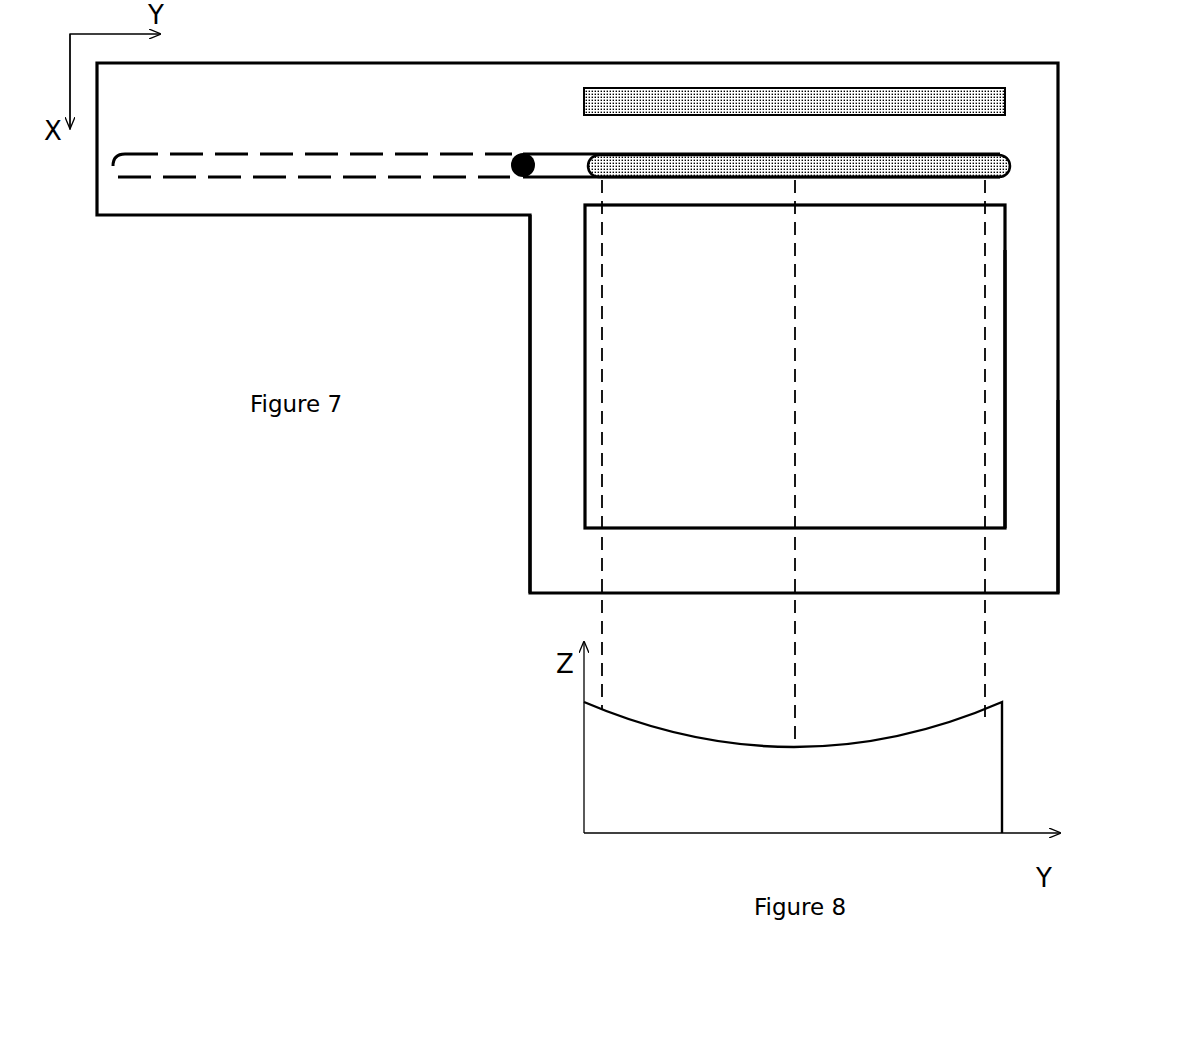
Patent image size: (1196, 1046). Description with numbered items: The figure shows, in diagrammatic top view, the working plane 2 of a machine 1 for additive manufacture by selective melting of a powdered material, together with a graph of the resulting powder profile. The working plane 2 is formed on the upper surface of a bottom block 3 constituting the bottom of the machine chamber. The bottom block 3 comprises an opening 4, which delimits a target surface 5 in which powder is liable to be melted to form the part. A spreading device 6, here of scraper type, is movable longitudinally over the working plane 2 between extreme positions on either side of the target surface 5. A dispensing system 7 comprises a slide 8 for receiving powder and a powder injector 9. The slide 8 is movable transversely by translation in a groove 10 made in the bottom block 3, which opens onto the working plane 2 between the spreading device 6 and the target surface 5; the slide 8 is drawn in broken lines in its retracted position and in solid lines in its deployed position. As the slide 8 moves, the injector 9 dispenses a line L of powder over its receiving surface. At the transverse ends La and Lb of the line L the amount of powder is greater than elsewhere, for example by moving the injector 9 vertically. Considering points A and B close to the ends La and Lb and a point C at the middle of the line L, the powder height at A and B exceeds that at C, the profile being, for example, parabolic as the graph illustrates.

In FIG. 7, the machine 1 is at (1080, 346).
In FIG. 7, the working plane 2 is at (546, 417).
In FIG. 7, the bottom block 3 is at (1060, 487).
In FIG. 7, the opening 4 is at (1010, 370).
In FIG. 7, the target surface 5 is at (795, 366).
In FIG. 7, the spreading device 6 is at (878, 84).
In FIG. 7, the dispensing system 7 is at (444, 141).
In FIG. 7, the slide 8 is at (998, 149).
In FIG. 7, the powder injector 9 is at (511, 150).
In FIG. 7, the groove 10 is at (562, 165).
In FIG. 7, the point A is at (603, 170).
In FIG. 8, the point A is at (607, 716).
In FIG. 7, the point B is at (981, 169).
In FIG. 8, the point B is at (981, 714).
In FIG. 7, the point C is at (802, 170).
In FIG. 8, the point C is at (794, 743).
In FIG. 7, the line of powder L is at (757, 170).
In FIG. 7, the transverse end La is at (587, 157).
In FIG. 7, the transverse end Lb is at (1014, 166).